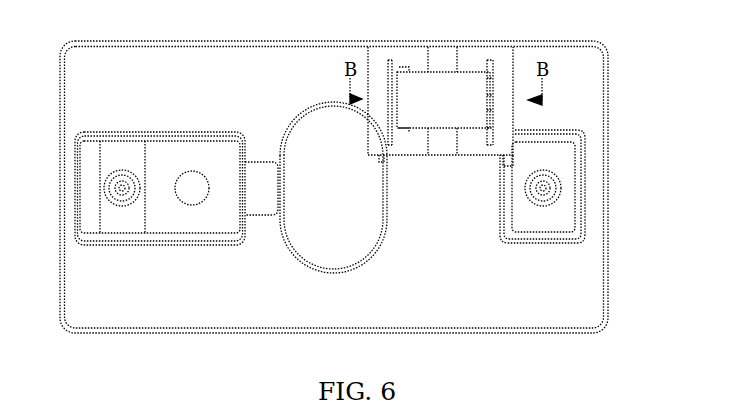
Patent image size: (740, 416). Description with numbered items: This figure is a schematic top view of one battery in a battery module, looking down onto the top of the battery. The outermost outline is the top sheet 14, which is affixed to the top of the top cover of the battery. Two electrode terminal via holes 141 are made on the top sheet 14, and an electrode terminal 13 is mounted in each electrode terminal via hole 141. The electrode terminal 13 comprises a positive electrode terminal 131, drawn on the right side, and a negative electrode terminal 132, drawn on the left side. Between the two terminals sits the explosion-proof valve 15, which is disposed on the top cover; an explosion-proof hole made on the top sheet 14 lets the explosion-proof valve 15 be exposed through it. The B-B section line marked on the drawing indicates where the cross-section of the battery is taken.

The electrode terminal 13 is at (582, 214).
The positive electrode terminal 131 is at (568, 177).
The negative electrode terminal 132 is at (167, 153).
The top sheet 14 is at (147, 63).
The electrode terminal via hole 141 is at (97, 133).
The explosion-proof valve 15 is at (284, 234).